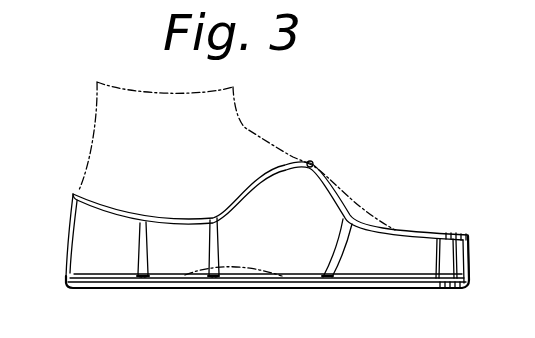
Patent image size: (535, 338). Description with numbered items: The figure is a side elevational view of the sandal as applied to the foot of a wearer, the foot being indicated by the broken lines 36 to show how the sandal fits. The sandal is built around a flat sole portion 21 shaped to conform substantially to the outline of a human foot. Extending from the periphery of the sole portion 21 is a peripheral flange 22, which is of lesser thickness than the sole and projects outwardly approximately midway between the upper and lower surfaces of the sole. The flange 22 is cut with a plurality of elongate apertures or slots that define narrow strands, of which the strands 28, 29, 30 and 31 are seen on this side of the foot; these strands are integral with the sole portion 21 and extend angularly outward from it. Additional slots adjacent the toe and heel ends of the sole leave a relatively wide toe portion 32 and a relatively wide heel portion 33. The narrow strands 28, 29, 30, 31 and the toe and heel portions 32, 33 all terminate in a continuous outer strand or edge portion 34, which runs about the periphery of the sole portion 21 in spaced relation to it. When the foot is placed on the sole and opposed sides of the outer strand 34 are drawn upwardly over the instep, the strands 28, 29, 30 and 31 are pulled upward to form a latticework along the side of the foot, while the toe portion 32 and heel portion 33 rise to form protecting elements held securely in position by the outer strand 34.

The sole portion 21 is at (270, 289).
The peripheral flange 22 is at (192, 285).
The strand 28 is at (139, 247).
The strand 29 is at (218, 246).
The strand 30 is at (338, 231).
The strand 31 is at (437, 258).
The toe portion 32 is at (469, 257).
The heel portion 33 is at (66, 233).
The outer strand 34 is at (98, 211).
The broken lines 36 is at (250, 123).